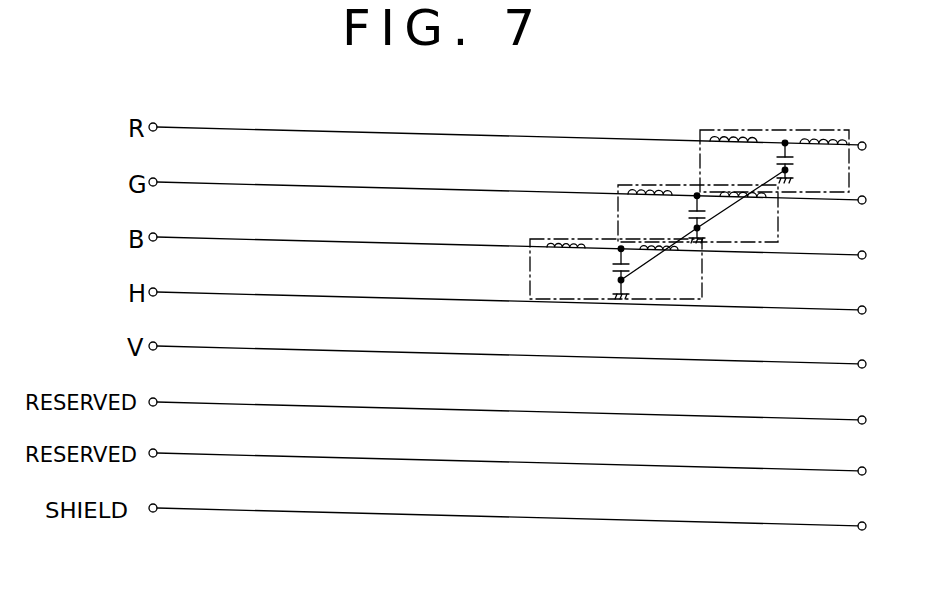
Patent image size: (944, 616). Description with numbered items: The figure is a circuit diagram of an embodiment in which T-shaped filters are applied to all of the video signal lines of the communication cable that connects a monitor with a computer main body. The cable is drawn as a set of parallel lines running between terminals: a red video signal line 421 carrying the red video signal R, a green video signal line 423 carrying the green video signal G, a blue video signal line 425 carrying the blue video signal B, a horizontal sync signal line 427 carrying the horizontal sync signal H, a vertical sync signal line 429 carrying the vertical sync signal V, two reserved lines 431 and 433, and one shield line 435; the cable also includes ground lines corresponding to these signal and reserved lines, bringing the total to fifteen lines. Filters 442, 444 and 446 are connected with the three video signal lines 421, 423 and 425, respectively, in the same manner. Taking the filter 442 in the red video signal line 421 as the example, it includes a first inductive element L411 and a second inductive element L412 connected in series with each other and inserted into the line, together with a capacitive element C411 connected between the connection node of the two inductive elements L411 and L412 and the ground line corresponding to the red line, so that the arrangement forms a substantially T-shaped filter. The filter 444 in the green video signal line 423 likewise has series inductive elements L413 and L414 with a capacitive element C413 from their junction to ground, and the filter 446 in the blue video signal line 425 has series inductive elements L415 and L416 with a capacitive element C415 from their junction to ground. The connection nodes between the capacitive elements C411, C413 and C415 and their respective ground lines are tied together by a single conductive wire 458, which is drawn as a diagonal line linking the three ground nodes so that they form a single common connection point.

The red video signal line 421 is at (507, 125).
The green video signal line 423 is at (507, 180).
The blue video signal line 425 is at (507, 235).
The horizontal sync signal line 427 is at (507, 290).
The vertical sync signal line 429 is at (507, 344).
The reserved line 431 is at (507, 401).
The reserved line 433 is at (507, 453).
The shield line 435 is at (507, 508).
The filter 442 is at (748, 128).
The filter 444 is at (658, 183).
The filter 446 is at (570, 236).
The single conductive wire 458 is at (713, 219).
The first inductive element L411 is at (737, 160).
The second inductive element L412 is at (827, 162).
The inductive element L413 is at (656, 212).
The inductive element L414 is at (749, 216).
The inductive element L415 is at (573, 265).
The inductive element L416 is at (672, 268).
The capacitive element C411 is at (795, 160).
The capacitive element C413 is at (707, 221).
The capacitive element C415 is at (612, 268).